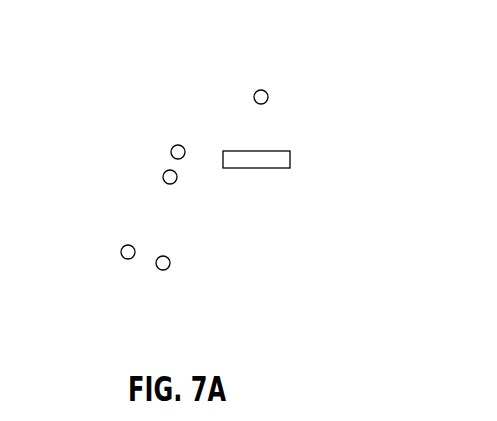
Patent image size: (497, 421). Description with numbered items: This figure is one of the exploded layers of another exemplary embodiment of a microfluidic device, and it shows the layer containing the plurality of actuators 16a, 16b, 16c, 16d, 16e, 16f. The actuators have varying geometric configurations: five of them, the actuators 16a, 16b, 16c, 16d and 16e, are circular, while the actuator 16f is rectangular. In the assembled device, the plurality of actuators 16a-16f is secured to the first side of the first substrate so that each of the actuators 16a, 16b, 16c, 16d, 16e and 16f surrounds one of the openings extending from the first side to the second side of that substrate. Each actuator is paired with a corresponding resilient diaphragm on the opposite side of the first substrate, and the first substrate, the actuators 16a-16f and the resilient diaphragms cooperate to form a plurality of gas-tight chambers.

The actuator 16a is at (158, 271).
The actuator 16b is at (122, 246).
The actuator 16c is at (164, 184).
The actuator 16d is at (171, 147).
The actuator 16e is at (262, 89).
The actuator 16f is at (290, 159).